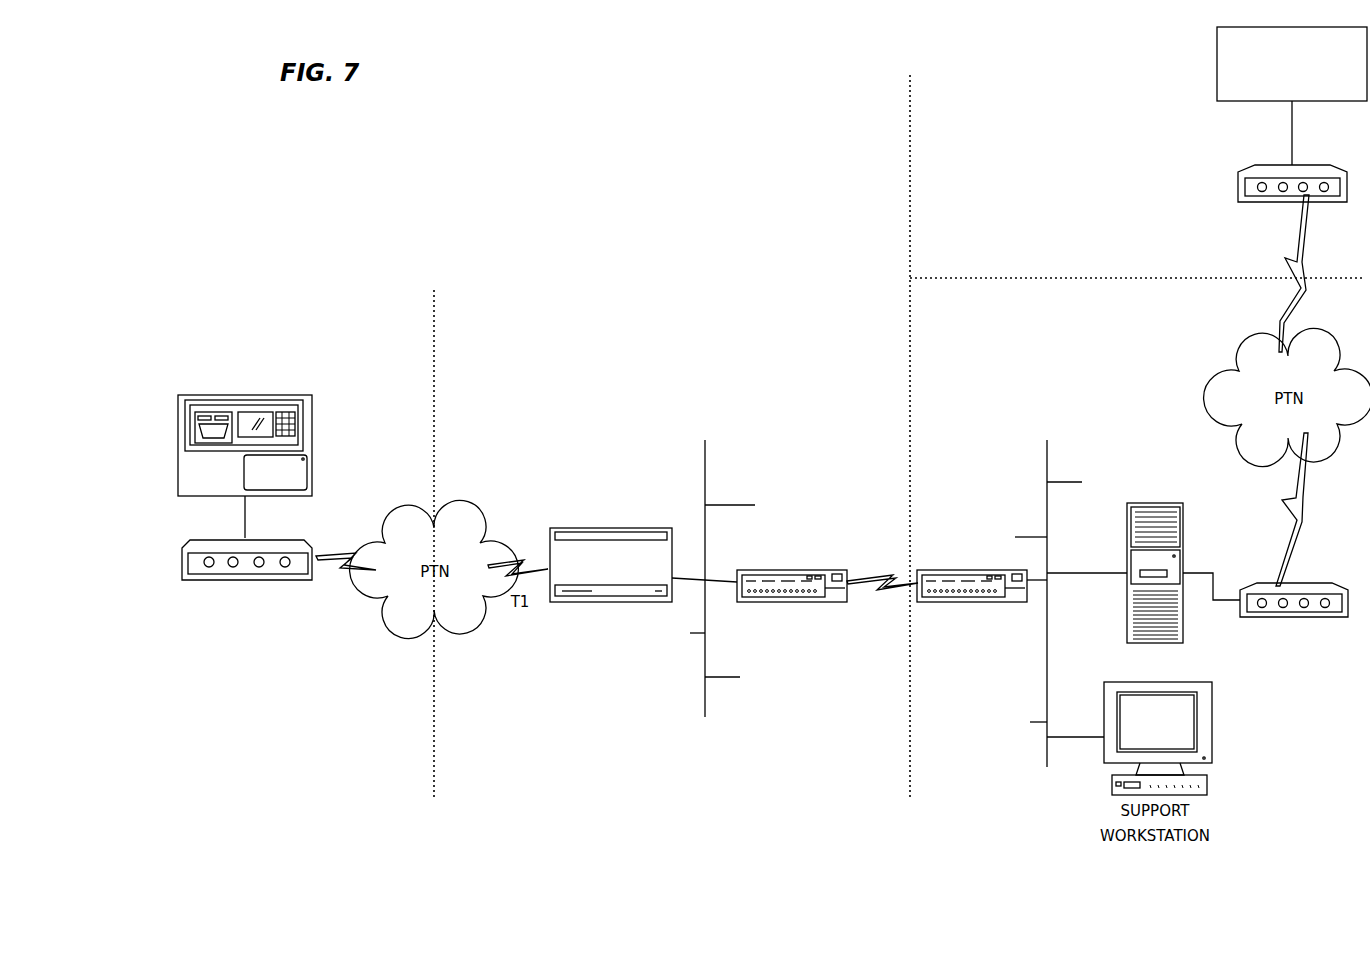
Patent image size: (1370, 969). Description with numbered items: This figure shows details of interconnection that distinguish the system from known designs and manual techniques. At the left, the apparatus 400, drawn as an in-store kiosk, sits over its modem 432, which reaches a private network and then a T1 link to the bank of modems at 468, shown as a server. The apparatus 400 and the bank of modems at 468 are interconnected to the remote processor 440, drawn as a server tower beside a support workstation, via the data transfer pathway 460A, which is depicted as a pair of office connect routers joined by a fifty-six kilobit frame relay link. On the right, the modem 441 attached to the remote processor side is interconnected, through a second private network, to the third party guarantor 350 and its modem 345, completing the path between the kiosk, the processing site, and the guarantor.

The apparatus 400 is at (331, 385).
The kiosk modem 432 is at (297, 539).
The bank of modems 468 is at (549, 540).
The data transfer pathway 460A is at (1023, 448).
The remote processor 440 is at (1145, 506).
The modem 441 is at (1315, 584).
The third party guarantor 350 is at (1217, 68).
The modem 345 is at (1238, 180).